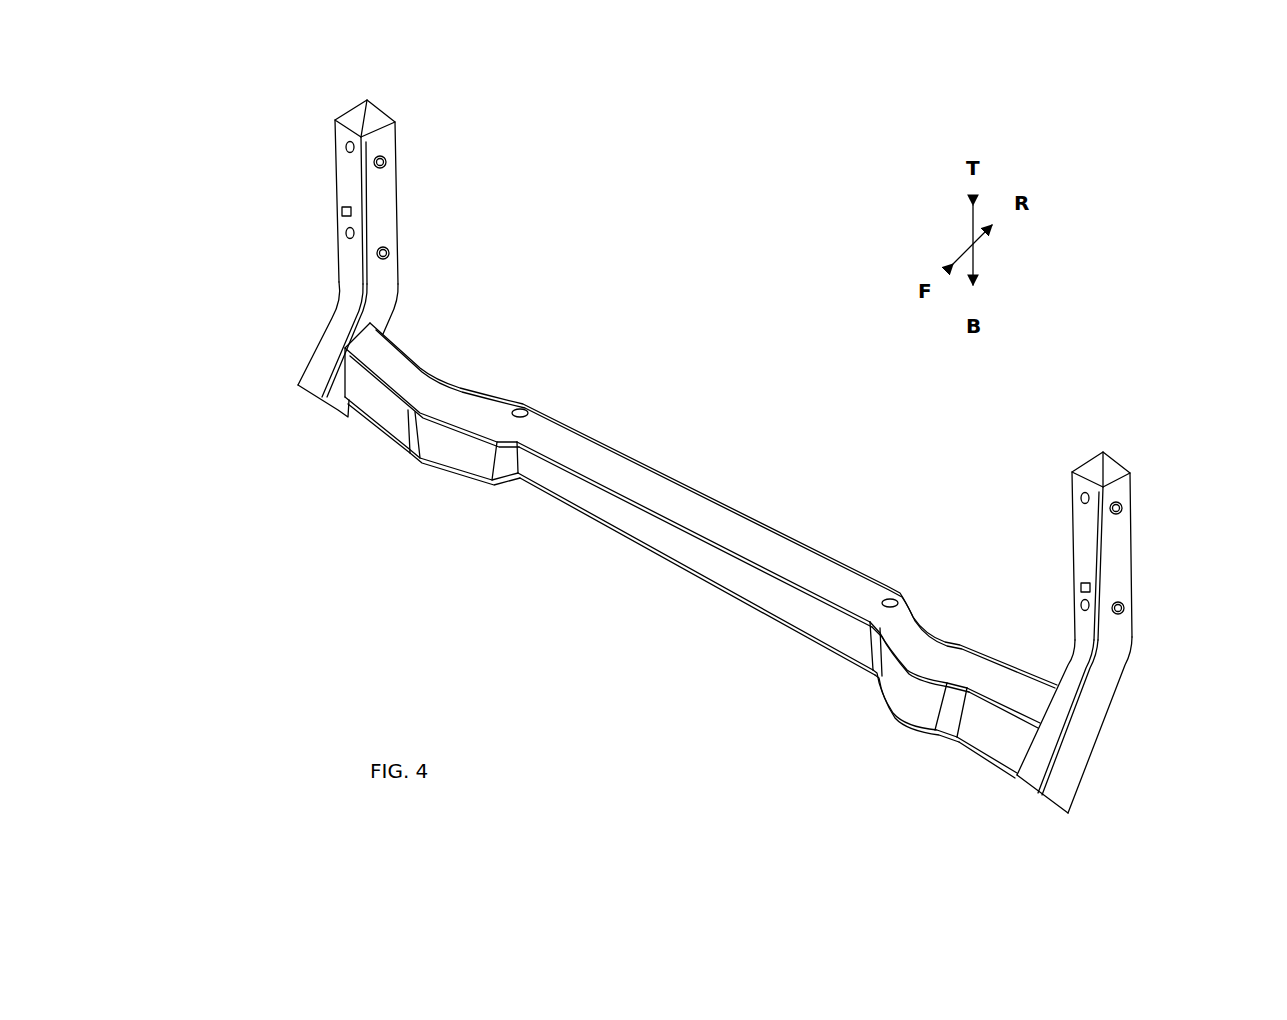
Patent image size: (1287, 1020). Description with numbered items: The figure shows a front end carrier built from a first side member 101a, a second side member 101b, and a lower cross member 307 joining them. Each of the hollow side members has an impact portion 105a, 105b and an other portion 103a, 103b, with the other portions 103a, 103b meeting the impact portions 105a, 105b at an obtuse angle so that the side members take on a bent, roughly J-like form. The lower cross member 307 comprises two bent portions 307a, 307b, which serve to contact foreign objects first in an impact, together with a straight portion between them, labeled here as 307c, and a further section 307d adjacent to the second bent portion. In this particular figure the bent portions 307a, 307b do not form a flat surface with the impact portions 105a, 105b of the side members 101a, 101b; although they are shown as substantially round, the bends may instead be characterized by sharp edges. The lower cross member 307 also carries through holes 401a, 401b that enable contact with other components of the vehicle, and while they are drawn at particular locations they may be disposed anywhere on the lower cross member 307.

The first side member 101a is at (372, 80).
The second side member 101b is at (1089, 422).
The other portion 103a is at (316, 270).
The other portion 103b is at (1147, 455).
The impact portion 105a is at (312, 294).
The impact portion 105b is at (1090, 812).
The lower cross member 307 is at (938, 833).
The bent portion 307a is at (452, 442).
The bent portion 307b is at (995, 730).
The central section of cross member 307c is at (628, 477).
The transition section of cross member 307d is at (903, 690).
The through hole 401a is at (525, 405).
The through hole 401b is at (885, 597).